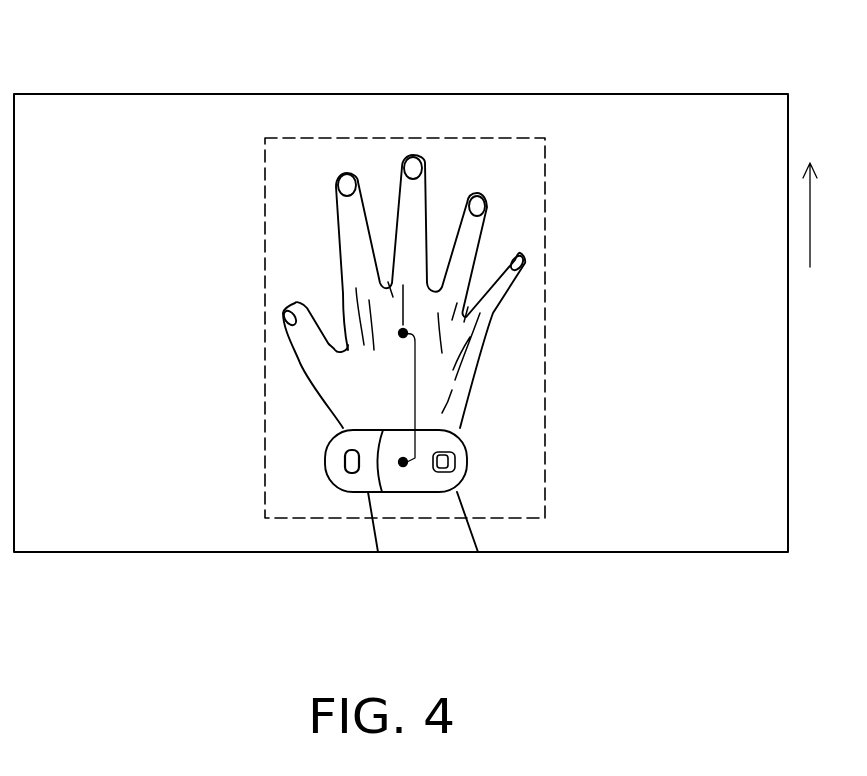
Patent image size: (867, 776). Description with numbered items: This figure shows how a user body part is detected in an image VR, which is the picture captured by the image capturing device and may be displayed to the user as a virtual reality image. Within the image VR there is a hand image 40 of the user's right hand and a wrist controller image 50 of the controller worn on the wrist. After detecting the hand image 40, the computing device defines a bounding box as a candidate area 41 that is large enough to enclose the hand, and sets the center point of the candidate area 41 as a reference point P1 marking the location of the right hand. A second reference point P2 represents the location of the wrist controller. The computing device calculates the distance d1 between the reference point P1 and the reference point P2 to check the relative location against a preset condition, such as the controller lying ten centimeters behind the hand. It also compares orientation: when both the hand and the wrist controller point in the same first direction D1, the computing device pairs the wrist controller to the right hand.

The image VR is at (402, 95).
The candidate area 41 is at (517, 137).
The hand image 40 is at (348, 217).
The wrist controller image 50 is at (342, 482).
The distance d1 is at (412, 399).
The reference point P1 is at (403, 333).
The reference point P2 is at (404, 466).
The first direction D1 is at (824, 215).